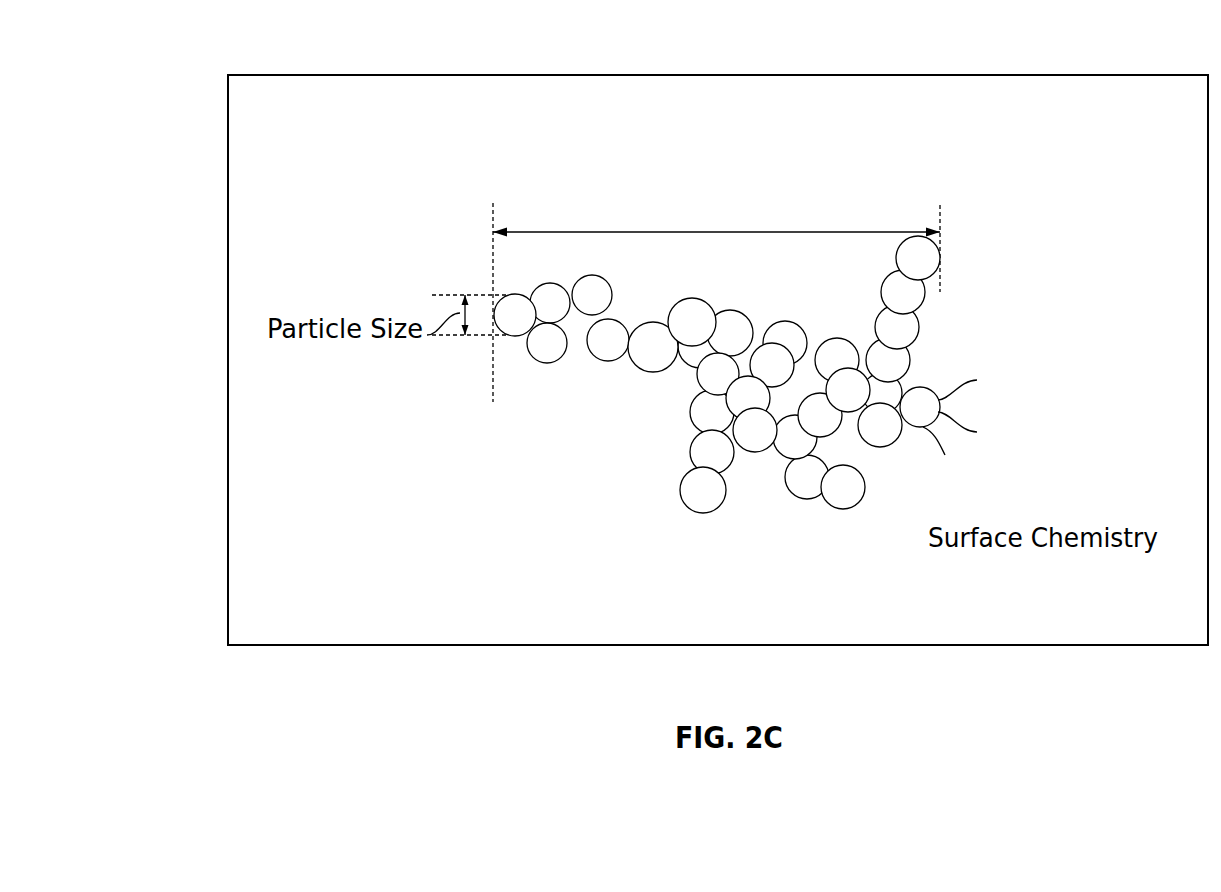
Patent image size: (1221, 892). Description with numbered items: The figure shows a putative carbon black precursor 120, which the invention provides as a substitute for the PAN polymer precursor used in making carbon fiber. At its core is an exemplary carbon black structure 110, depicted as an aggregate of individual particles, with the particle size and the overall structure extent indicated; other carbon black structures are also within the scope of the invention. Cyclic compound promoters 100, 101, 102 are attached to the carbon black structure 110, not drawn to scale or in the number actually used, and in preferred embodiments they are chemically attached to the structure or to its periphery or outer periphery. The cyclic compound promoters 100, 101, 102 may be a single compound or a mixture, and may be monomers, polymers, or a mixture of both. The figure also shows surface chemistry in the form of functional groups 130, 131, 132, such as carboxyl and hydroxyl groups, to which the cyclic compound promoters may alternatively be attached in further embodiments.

The carbon black precursor 120 is at (491, 42).
The carbon black structure 110 is at (812, 231).
The cyclic compound promoter 102 is at (940, 258).
The cyclic compound promoter 100 is at (680, 490).
The cyclic compound promoter 101 is at (842, 510).
The functional group 130 is at (1028, 356).
The functional group 131 is at (1067, 411).
The functional group 132 is at (990, 478).